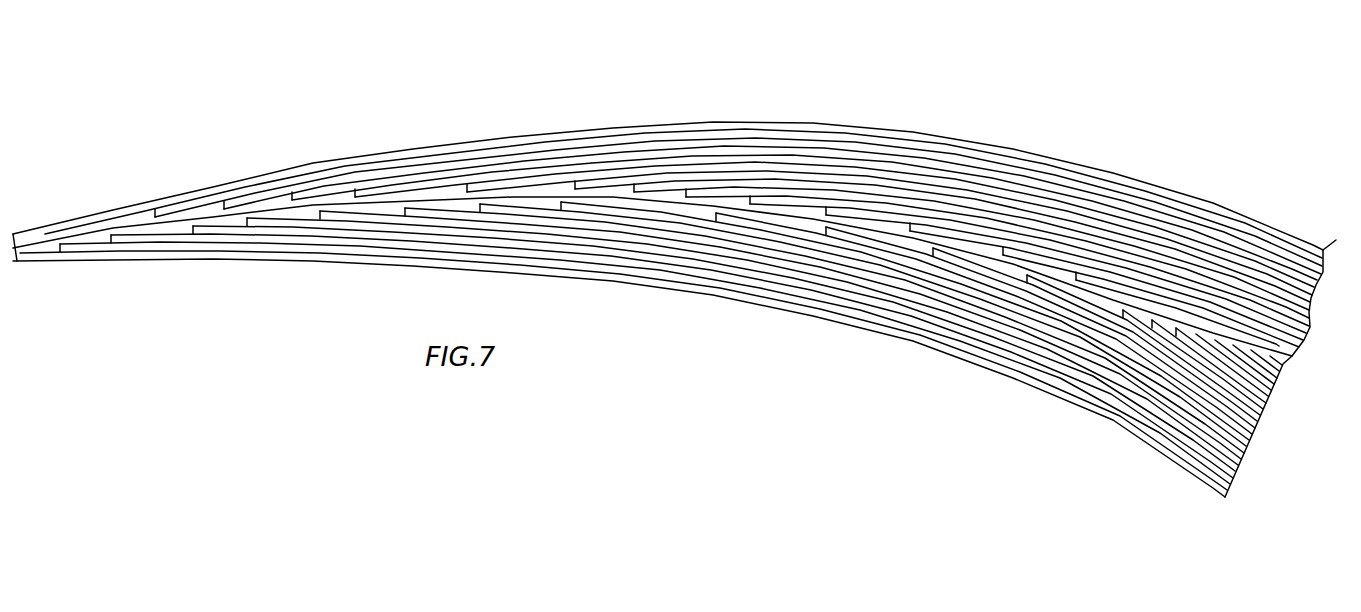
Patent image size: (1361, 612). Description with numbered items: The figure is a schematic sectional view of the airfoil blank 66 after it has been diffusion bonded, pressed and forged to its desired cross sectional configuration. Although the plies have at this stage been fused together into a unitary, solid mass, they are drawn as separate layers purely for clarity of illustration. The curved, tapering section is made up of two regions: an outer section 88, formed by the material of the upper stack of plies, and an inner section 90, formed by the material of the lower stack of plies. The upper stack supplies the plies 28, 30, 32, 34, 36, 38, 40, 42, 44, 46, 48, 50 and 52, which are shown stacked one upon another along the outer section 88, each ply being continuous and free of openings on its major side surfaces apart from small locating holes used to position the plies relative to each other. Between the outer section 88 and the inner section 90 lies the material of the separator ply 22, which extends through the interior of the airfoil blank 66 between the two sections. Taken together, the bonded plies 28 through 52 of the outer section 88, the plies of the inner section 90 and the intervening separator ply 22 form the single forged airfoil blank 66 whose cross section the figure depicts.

The separator ply 22 is at (26, 238).
The ply 28 is at (1233, 332).
The ply 30 is at (1195, 305).
The ply 32 is at (1112, 270).
The ply 34 is at (1022, 240).
The ply 36 is at (917, 212).
The ply 38 is at (832, 190).
The ply 40 is at (747, 182).
The ply 42 is at (660, 173).
The ply 44 is at (577, 168).
The ply 46 is at (503, 168).
The ply 48 is at (423, 168).
The ply 50 is at (347, 170).
The ply 52 is at (293, 170).
The airfoil blank 66 is at (1134, 128).
The outer section 88 is at (893, 133).
The inner section 90 is at (848, 323).